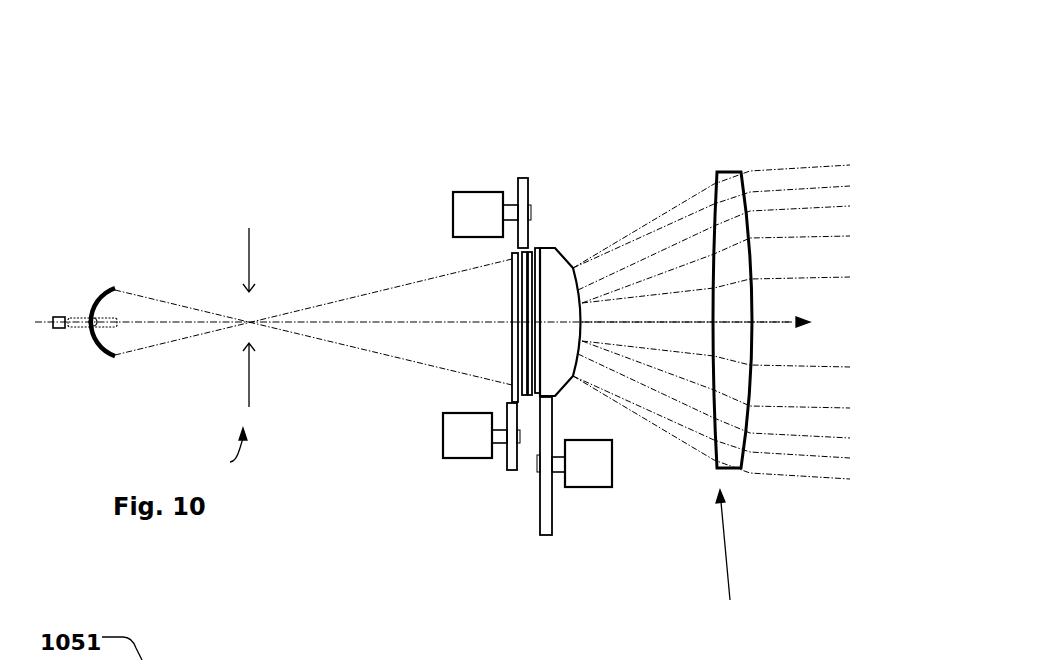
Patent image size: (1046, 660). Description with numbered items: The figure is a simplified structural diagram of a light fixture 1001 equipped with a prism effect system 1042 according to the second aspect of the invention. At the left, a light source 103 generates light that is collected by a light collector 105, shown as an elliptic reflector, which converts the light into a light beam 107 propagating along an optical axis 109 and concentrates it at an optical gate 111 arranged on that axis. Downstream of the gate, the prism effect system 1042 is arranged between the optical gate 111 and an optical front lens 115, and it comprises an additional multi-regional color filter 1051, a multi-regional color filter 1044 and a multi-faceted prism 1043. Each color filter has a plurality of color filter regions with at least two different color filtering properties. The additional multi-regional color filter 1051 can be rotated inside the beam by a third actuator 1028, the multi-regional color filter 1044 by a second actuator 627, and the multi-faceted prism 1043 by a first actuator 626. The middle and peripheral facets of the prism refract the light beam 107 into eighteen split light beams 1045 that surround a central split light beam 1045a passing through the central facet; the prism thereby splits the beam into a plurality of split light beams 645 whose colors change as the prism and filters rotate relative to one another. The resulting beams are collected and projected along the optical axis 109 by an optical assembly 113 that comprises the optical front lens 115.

The light fixture 1001 is at (205, 130).
The light source 103 is at (93, 320).
The light collector 105 is at (112, 357).
The light beam 107 is at (318, 305).
The optical gate 111 is at (230, 462).
The additional multi-regional color filter 1051 is at (510, 307).
The multi-regional color filter 1044 is at (530, 250).
The second actuator 627 is at (485, 214).
The multi-faceted prism 1043 is at (547, 323).
The prism effect system 1042 is at (508, 492).
The third actuator 1028 is at (475, 435).
The first actuator 626 is at (582, 463).
The split light beams 645 is at (678, 420).
The split light beams 1045 is at (711, 311).
The central split light beam 1045a is at (686, 311).
The optical front lens 115 is at (717, 170).
The optical axis 109 is at (782, 326).
The optical assembly 113 is at (730, 600).